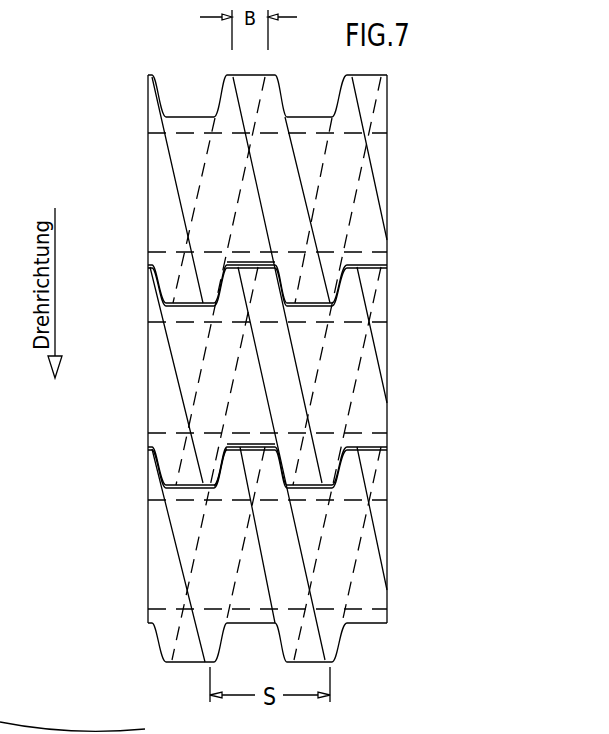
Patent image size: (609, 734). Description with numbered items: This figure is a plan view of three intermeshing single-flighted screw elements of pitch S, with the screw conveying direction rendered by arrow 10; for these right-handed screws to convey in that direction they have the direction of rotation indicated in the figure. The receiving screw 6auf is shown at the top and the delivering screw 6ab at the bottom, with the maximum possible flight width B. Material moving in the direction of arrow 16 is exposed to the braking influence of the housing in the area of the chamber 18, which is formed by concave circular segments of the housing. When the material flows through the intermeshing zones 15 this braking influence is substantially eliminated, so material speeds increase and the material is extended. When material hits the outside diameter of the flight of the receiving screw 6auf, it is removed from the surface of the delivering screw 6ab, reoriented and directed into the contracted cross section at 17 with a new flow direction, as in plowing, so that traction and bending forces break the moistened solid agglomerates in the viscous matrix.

The arrow indicating screw conveying direction 10 is at (68, 192).
The intermeshing zones 15 is at (397, 272).
The arrow indicating material movement direction 16 is at (248, 263).
The contracted cross section 17 is at (207, 459).
The chamber 18 is at (207, 357).
The delivering screw 6ab is at (248, 207).
The receiving screw 6auf is at (230, 337).